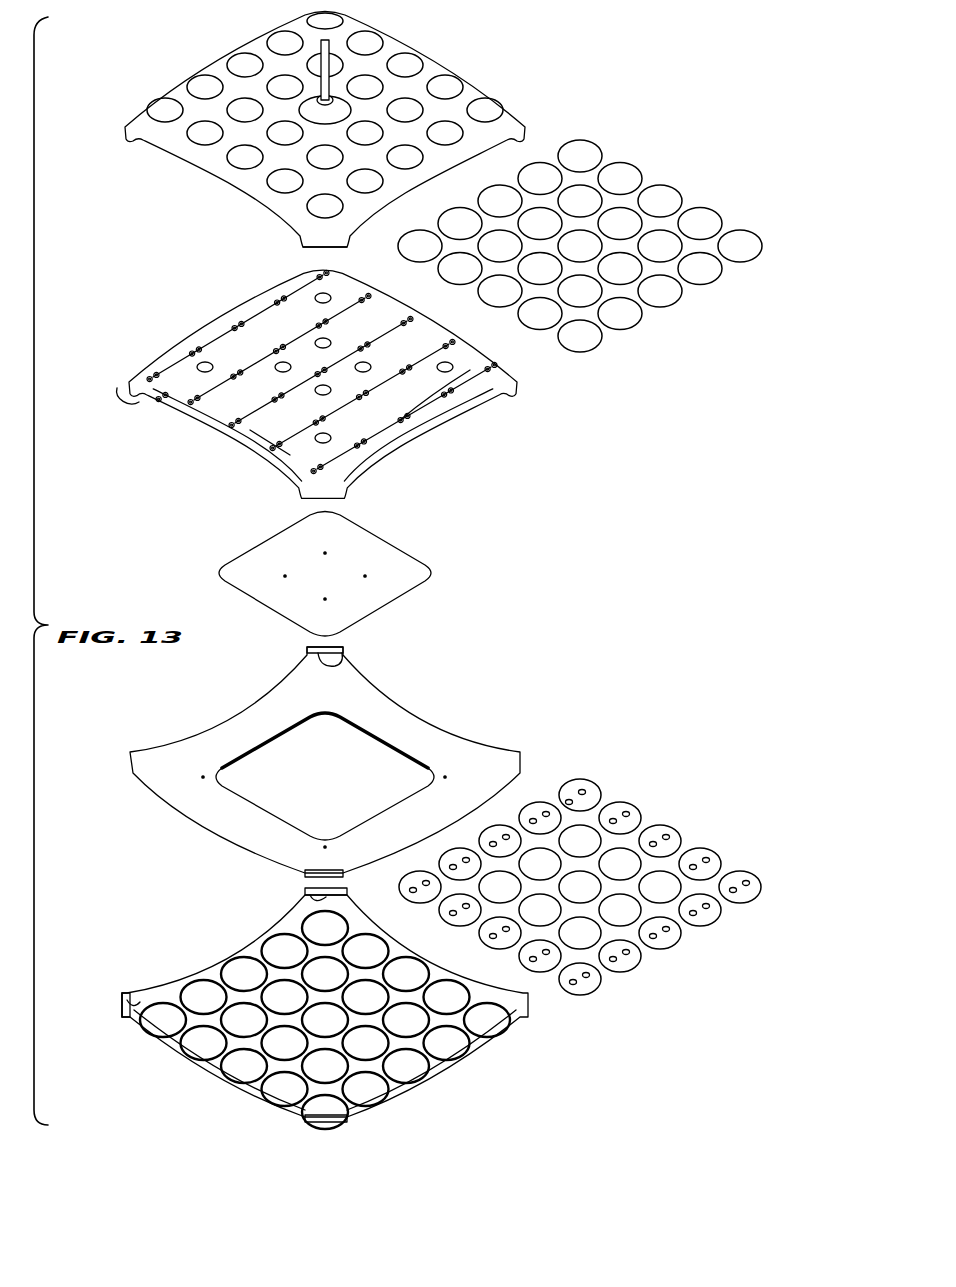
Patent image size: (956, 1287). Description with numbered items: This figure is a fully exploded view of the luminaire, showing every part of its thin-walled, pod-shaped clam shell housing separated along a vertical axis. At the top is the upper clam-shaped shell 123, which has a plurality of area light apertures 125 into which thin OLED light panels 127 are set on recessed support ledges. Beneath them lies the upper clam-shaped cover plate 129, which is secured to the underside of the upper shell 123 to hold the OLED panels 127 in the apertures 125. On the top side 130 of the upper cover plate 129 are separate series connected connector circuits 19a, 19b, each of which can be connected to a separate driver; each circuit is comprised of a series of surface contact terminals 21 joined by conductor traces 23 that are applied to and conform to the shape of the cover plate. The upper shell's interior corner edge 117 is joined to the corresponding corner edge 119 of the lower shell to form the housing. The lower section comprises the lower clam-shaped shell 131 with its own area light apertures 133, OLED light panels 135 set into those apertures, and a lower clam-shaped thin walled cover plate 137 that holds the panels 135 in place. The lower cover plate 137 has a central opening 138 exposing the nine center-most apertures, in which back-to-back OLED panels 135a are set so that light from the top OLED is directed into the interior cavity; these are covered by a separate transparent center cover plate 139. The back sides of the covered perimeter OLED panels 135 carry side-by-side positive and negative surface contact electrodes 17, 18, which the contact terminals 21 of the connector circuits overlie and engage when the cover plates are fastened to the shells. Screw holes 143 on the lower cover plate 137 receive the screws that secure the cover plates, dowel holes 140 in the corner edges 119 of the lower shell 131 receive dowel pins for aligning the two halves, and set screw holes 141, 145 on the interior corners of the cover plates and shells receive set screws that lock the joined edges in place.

The upper clam-shaped shell 123 is at (470, 95).
The area light apertures 125 is at (368, 42).
The interior corner edge 117 is at (315, 248).
The thin OLED light panels 127 is at (653, 182).
The upper clam-shaped cover plate 129 is at (478, 403).
The top side of upper cover plate 130 is at (428, 413).
The conductor traces 23 is at (225, 332).
The surface contact terminals 21 is at (195, 348).
The connector circuit 19a is at (163, 397).
The connector circuit 19b is at (274, 426).
The center cover plate 139 is at (397, 563).
The lower clam-shaped cover plate 137 is at (460, 747).
The central opening 138 is at (370, 757).
The set screw holes 141 is at (337, 658).
The screw holes 143 is at (323, 707).
The dowel holes 140 is at (317, 888).
The set screw holes 145 is at (315, 896).
The interior corner edge 119 is at (127, 995).
The lower clam-shaped shell 131 is at (437, 1067).
The area light apertures 133 is at (233, 1070).
The OLED light panels 135 is at (663, 810).
The back-to-back OLED panels 135a is at (543, 860).
The surface contact electrode 17 is at (569, 798).
The surface contact electrode 18 is at (584, 789).